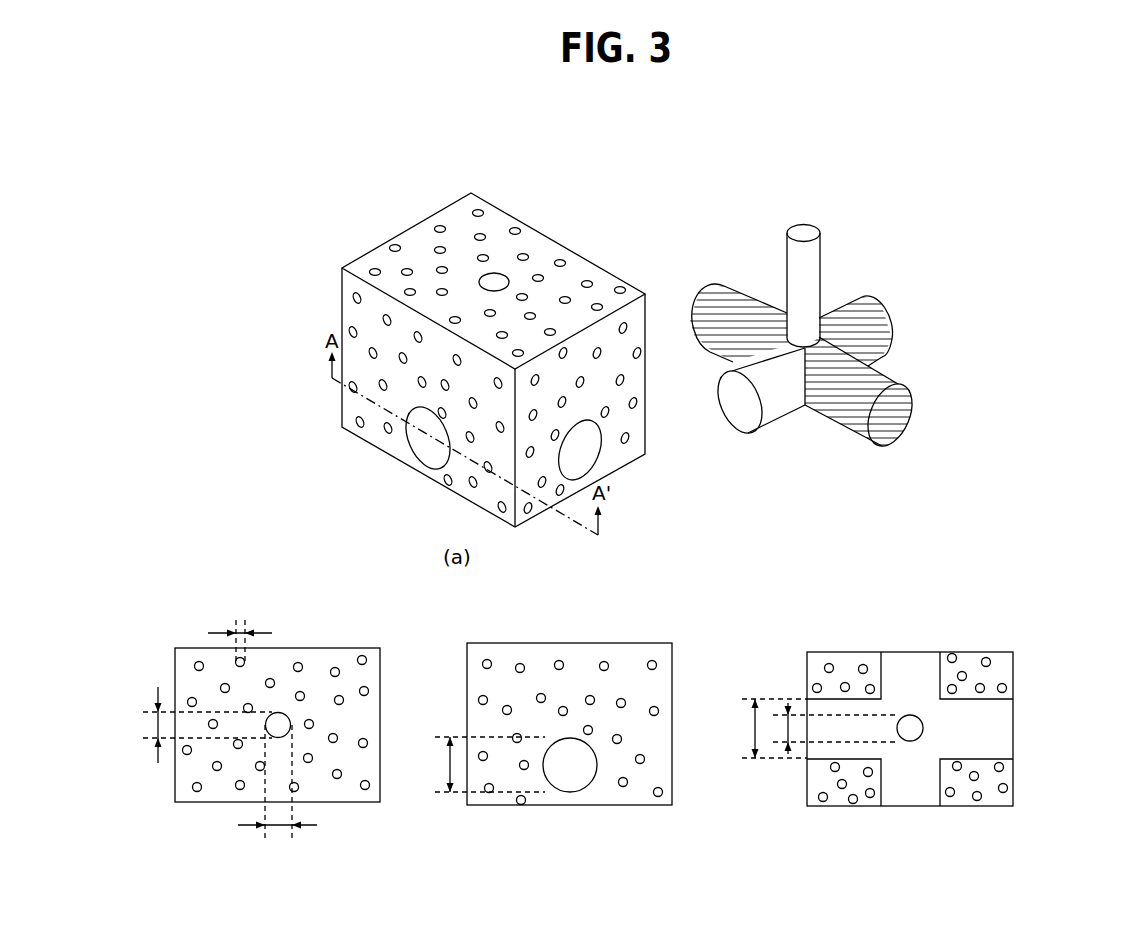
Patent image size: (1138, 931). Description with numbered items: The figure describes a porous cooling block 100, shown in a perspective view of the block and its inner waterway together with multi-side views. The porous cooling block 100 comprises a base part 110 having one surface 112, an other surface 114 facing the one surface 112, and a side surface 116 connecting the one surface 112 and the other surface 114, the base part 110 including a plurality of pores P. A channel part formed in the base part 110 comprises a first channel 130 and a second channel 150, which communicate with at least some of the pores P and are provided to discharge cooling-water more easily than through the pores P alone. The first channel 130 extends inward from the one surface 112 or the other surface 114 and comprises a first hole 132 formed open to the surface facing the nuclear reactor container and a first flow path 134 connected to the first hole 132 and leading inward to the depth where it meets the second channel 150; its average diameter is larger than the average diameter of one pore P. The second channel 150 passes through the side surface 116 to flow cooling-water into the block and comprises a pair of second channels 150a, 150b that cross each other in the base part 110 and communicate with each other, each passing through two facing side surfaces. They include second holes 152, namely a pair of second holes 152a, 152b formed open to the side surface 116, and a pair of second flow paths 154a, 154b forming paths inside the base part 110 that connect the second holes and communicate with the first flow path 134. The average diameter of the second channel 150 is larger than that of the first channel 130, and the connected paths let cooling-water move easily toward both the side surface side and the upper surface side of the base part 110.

The porous cooling block 100 is at (200, 489).
The base part 110 is at (254, 314).
The one surface 112 is at (400, 290).
The other surface 114 is at (350, 443).
The side surface 116 is at (348, 354).
The first channel 130 is at (474, 277).
The first hole 132 is at (822, 234).
The first flow path 134 is at (815, 272).
The second channel 150 is at (402, 438).
The second channel 150a is at (982, 418).
The second channel 150b is at (972, 302).
The second holes 152 is at (592, 778).
The second hole 152a is at (882, 447).
The second hole 152b is at (868, 318).
The second flow path 154a is at (880, 412).
The second flow path 154b is at (873, 333).
The pores P is at (394, 244).